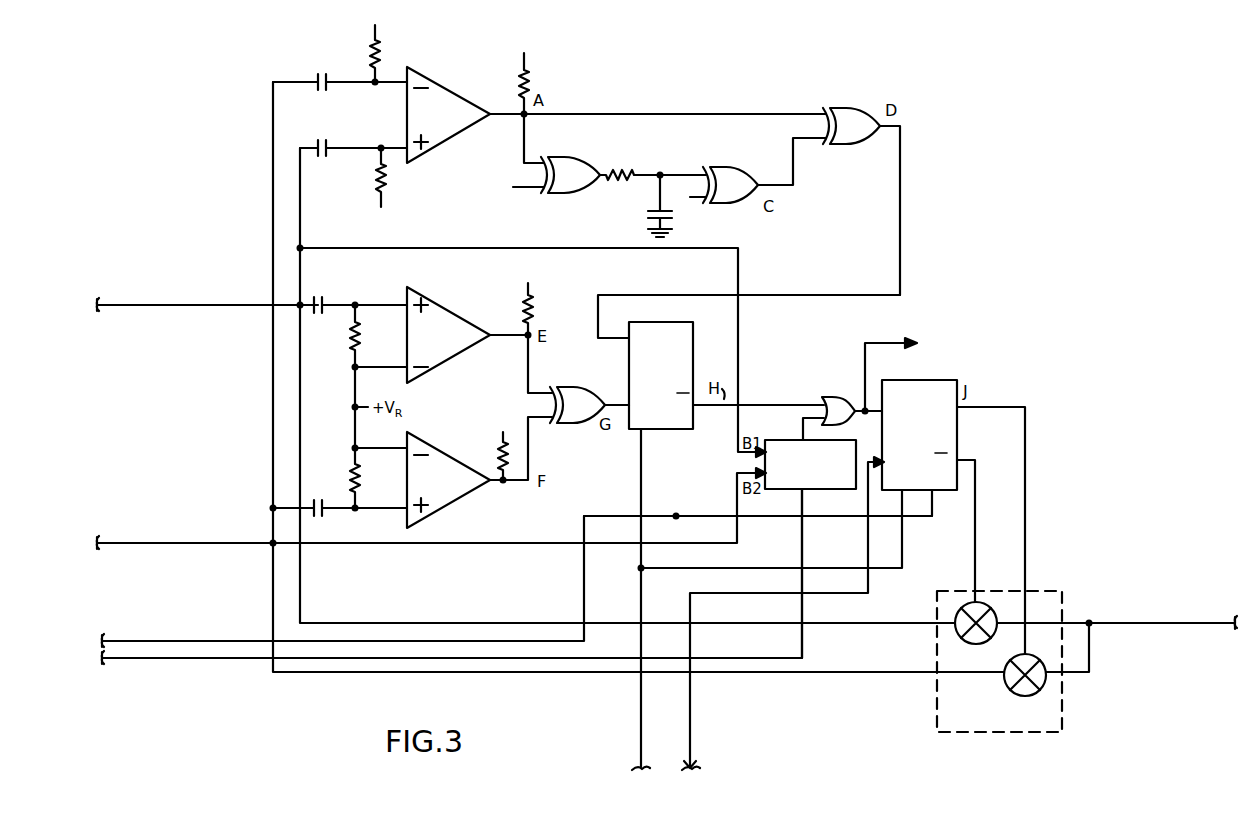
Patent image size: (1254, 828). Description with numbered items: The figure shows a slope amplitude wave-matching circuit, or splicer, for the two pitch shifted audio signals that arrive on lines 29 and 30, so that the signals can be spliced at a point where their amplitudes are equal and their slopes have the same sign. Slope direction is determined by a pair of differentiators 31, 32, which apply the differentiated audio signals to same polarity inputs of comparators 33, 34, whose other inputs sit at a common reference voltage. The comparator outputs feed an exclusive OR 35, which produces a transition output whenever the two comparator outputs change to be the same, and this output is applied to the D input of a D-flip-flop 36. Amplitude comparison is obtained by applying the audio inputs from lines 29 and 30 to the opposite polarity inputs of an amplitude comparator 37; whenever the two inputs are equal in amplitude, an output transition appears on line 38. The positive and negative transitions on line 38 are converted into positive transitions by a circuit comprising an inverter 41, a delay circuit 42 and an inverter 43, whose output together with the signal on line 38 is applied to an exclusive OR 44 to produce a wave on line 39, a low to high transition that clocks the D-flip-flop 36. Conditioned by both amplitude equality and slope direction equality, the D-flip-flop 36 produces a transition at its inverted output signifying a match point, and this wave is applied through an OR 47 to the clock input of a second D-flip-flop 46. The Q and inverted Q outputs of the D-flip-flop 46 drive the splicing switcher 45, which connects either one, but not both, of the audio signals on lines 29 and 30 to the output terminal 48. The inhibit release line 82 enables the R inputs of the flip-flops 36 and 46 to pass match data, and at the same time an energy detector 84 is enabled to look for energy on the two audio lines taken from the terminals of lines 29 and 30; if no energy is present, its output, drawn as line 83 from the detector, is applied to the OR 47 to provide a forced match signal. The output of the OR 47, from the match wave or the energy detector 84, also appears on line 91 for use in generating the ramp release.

The line 29 is at (244, 305).
The line 30 is at (196, 543).
The differentiator 31 is at (337, 304).
The differentiator 32 is at (329, 508).
The comparator 33 is at (468, 302).
The comparator 34 is at (466, 448).
The exclusive OR 35 is at (584, 382).
The D-flip-flop 36 is at (693, 360).
The amplitude comparator 37 is at (462, 83).
The line 38 is at (584, 112).
The line 39 is at (900, 230).
The inverter 41 is at (590, 153).
The delay circuit 42 is at (659, 175).
The inverter 43 is at (744, 160).
The exclusive OR 44 is at (868, 98).
The splicing switcher 45 is at (937, 599).
The D-flip-flop 46 is at (932, 370).
The OR 47 is at (824, 397).
The output terminal 48 is at (1103, 622).
The inhibit release line 82 is at (612, 514).
The energy detector output line 83 is at (802, 545).
The energy detector 84 is at (793, 440).
The line 91 is at (865, 374).